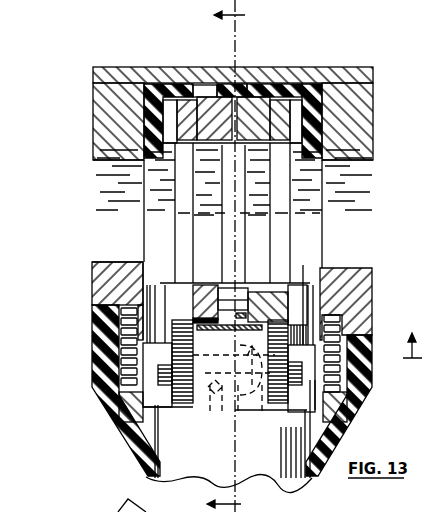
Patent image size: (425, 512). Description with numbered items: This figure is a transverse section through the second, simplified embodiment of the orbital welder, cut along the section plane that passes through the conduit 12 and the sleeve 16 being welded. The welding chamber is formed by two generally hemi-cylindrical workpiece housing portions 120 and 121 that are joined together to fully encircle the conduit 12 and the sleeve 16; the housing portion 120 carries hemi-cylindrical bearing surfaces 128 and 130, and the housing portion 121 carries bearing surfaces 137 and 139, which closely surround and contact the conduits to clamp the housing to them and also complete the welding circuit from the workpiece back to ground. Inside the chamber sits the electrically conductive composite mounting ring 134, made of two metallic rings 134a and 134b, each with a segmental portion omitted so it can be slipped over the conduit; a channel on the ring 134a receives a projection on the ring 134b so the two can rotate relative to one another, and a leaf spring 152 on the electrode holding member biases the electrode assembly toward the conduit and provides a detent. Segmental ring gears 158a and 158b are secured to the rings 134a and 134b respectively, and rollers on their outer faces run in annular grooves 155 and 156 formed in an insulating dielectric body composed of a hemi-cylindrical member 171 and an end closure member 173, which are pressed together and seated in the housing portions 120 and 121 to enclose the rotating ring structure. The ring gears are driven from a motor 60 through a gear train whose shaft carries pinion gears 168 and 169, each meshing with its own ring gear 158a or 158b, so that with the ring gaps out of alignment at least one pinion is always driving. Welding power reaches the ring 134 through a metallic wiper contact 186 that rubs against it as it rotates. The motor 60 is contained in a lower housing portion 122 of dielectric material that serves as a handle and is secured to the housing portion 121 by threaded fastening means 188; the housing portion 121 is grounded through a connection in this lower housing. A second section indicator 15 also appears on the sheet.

The conduit 12 is at (416, 294).
The section line 15 is at (420, 387).
The sleeve 16 is at (264, 30).
The motor 60 is at (175, 471).
The workpiece housing portion 120 is at (343, 73).
The workpiece housing portion 121 is at (94, 302).
The lower housing portion 122 is at (100, 382).
The bearing surface 128 is at (135, 172).
The bearing surface 130 is at (345, 179).
The composite mounting ring 134 is at (244, 86).
The metallic ring 134a is at (252, 108).
The metallic ring 134b is at (218, 85).
The bearing surface 137 is at (125, 265).
The bearing surface 139 is at (321, 270).
The leaf spring 152 is at (227, 302).
The annular groove 155 is at (162, 104).
The annular groove 156 is at (303, 122).
The segmental ring gear 158a is at (282, 247).
The segmental ring gear 158b is at (180, 232).
The pinion gear 168 is at (284, 403).
The pinion gear 169 is at (193, 400).
The hemi-cylindrical dielectric member 171 is at (175, 90).
The end closure member 173 is at (299, 132).
The wiper contact 186 is at (262, 340).
The threaded fastening means 188 is at (128, 397).